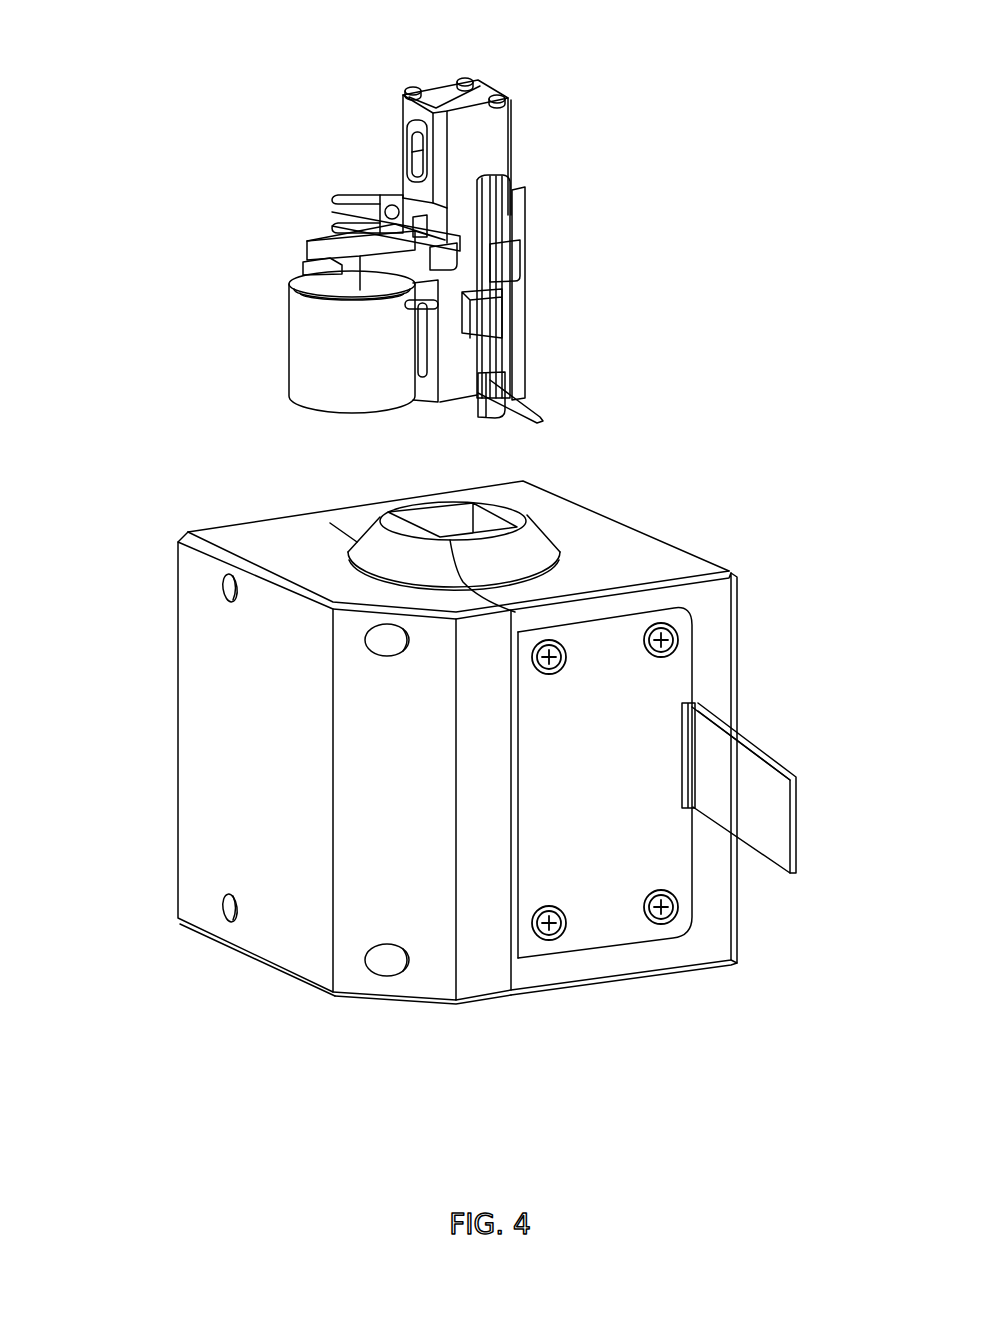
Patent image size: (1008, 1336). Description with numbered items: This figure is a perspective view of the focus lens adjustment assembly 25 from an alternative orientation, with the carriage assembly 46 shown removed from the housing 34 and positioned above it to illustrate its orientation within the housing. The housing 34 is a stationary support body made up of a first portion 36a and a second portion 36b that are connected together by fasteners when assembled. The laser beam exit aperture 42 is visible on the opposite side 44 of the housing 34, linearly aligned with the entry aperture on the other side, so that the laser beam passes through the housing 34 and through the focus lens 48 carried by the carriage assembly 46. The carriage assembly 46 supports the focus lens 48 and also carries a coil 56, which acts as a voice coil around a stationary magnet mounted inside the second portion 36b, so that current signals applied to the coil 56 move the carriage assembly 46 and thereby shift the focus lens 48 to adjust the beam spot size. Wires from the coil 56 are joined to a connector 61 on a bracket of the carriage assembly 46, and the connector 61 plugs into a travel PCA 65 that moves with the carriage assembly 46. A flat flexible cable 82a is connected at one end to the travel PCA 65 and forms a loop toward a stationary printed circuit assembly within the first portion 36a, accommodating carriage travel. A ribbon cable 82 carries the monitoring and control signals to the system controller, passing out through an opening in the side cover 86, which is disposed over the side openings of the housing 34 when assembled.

The focus lens adjustment assembly 25 is at (122, 395).
The housing 34 is at (178, 572).
The first portion 36a is at (647, 528).
The second portion 36b is at (178, 735).
The laser beam exit aperture 42 is at (500, 517).
The opposite side 44 is at (260, 540).
The carriage assembly 46 is at (512, 126).
The focus lens 48 is at (452, 105).
The coil 56 is at (305, 340).
The connector 61 is at (380, 242).
The travel PCA 65 is at (513, 260).
The ribbon cable 82 is at (798, 810).
The flat flexible cable 82a is at (530, 420).
The side cover 86 is at (655, 692).